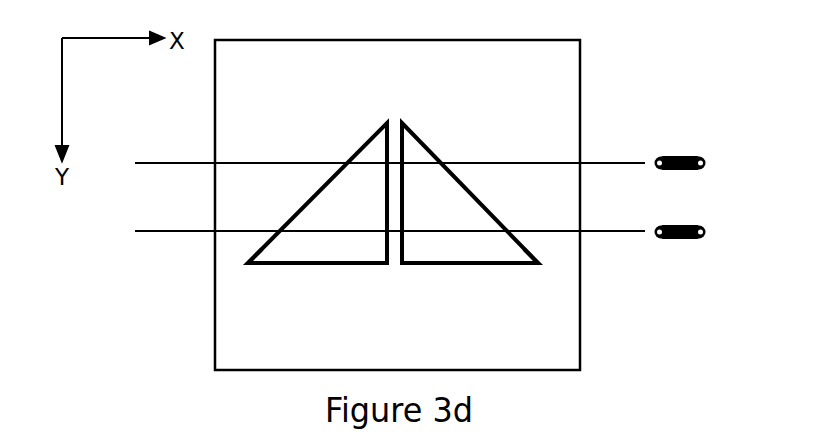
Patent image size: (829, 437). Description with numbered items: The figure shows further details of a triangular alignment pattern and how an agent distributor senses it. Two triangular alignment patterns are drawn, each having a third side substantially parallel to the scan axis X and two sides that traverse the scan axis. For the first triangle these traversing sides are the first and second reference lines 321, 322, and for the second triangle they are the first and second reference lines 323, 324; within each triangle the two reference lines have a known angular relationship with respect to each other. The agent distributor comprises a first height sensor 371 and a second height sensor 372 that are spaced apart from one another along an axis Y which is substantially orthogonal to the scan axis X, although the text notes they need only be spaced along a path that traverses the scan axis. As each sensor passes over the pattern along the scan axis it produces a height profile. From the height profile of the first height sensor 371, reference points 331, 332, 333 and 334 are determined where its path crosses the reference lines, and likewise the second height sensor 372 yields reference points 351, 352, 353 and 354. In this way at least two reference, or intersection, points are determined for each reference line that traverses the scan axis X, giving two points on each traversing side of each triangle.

The first reference line 321 is at (257, 256).
The second reference line 322 is at (384, 250).
The first reference line 323 is at (405, 250).
The second reference line 324 is at (530, 250).
The reference point 331 is at (280, 230).
The reference point 332 is at (386, 230).
The reference point 333 is at (403, 230).
The reference point 334 is at (508, 230).
The reference point 351 is at (347, 162).
The reference point 352 is at (386, 161).
The reference point 353 is at (403, 161).
The reference point 354 is at (441, 162).
The first height sensor 371 is at (685, 243).
The second height sensor 372 is at (686, 153).